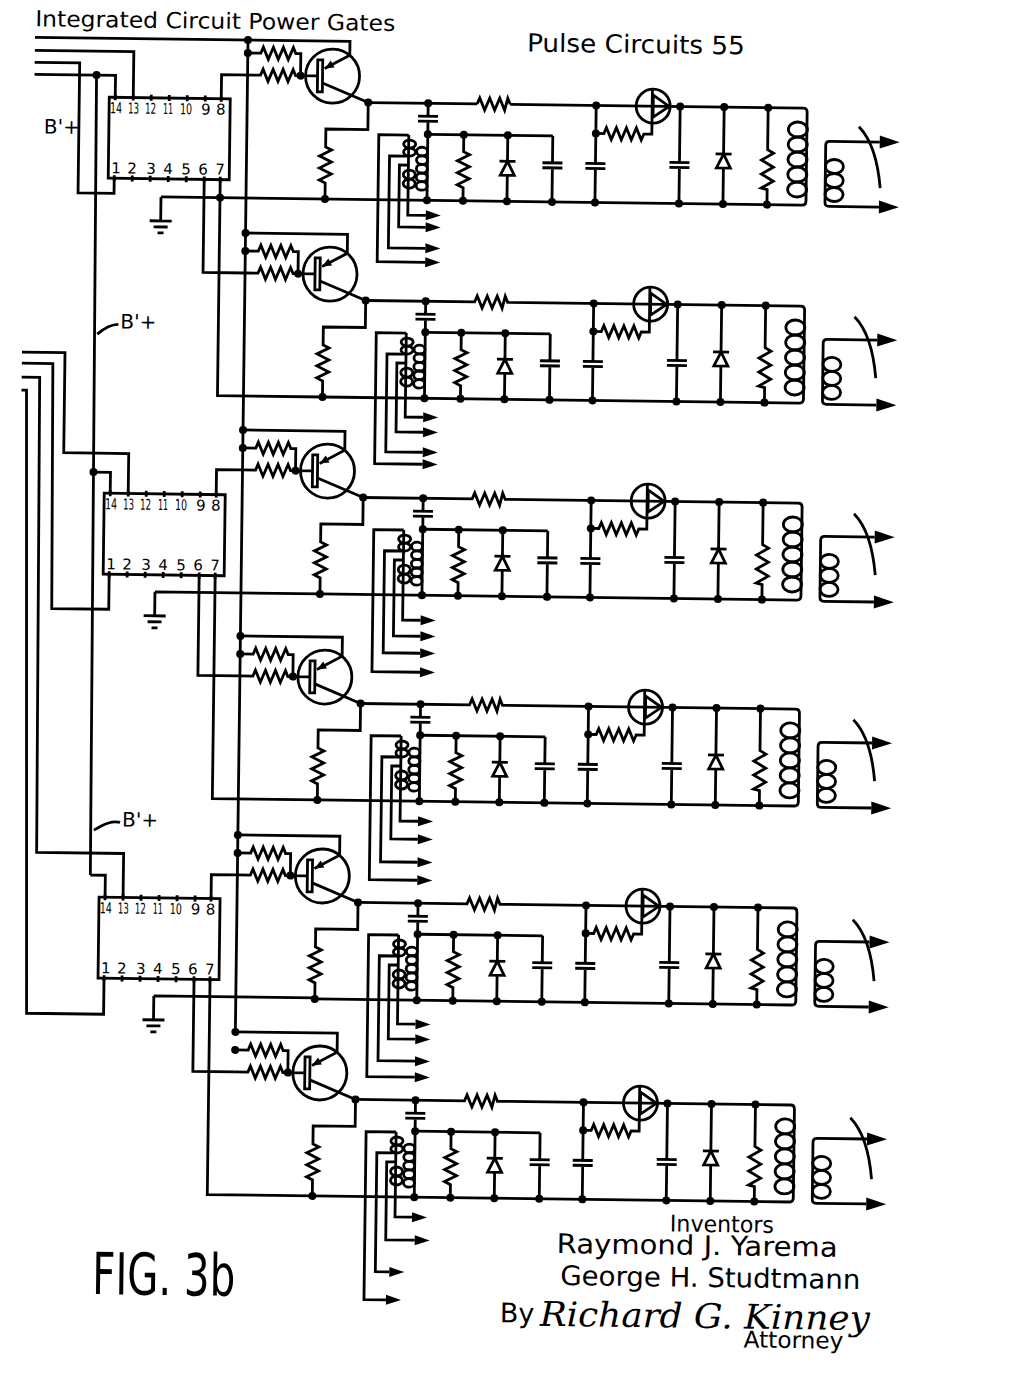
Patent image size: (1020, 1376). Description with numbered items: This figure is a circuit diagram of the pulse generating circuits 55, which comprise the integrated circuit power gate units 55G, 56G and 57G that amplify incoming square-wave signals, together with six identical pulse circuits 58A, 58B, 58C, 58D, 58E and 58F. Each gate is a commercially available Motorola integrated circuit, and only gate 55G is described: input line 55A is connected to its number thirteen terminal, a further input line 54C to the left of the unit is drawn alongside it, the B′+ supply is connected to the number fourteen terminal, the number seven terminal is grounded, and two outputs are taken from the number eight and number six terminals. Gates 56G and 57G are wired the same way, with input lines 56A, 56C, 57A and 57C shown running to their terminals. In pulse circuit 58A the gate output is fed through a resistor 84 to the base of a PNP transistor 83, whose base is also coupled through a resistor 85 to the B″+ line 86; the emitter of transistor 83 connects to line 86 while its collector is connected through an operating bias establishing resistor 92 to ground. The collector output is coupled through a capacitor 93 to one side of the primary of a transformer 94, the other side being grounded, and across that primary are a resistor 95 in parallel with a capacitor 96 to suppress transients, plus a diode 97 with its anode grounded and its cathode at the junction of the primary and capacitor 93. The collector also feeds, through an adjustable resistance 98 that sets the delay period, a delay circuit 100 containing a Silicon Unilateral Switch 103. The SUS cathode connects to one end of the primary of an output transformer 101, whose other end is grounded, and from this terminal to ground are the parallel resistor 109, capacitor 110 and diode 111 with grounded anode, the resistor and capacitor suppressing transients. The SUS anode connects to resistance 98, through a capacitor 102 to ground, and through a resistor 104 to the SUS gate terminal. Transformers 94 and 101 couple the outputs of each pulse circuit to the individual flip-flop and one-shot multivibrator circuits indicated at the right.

The input line 54C is at (71, 87).
The pulse generating circuits 55 is at (84, 74).
The input line 55A is at (134, 79).
The integrated circuit power gate unit 55G is at (169, 138).
The input line 56A is at (40, 350).
The input line 56C is at (70, 163).
The integrated circuit power gate unit 56G is at (164, 534).
The input line 57A is at (39, 940).
The input line 57C is at (46, 730).
The integrated circuit power gate unit 57G is at (159, 938).
The pulse circuit 58A is at (662, 89).
The pulse circuit 58B is at (656, 372).
The pulse circuit 58C is at (658, 572).
The pulse circuit 58D is at (661, 781).
The pulse circuit 58E is at (663, 982).
The pulse circuit 58F is at (662, 1186).
The PNP transistor 83 is at (353, 78).
The resistor 84 is at (269, 89).
The resistor 85 is at (259, 62).
The B″+ line 86 is at (192, 49).
The operating bias establishing resistor 92 is at (332, 153).
The capacitor 93 is at (411, 117).
The transformer 94 is at (419, 199).
The resistor 95 is at (477, 168).
The capacitor 96 is at (564, 168).
The diode 97 is at (520, 168).
The variable resistor 98 is at (478, 94).
The delay circuit 100 is at (680, 134).
The output transformer 101 is at (833, 126).
The capacitor 102 is at (616, 156).
The Silicon Unilateral Switch device 103 is at (654, 92).
The resistor 104 is at (621, 107).
The resistor 109 is at (752, 156).
The capacitor 110 is at (689, 155).
The diode 111 is at (736, 156).